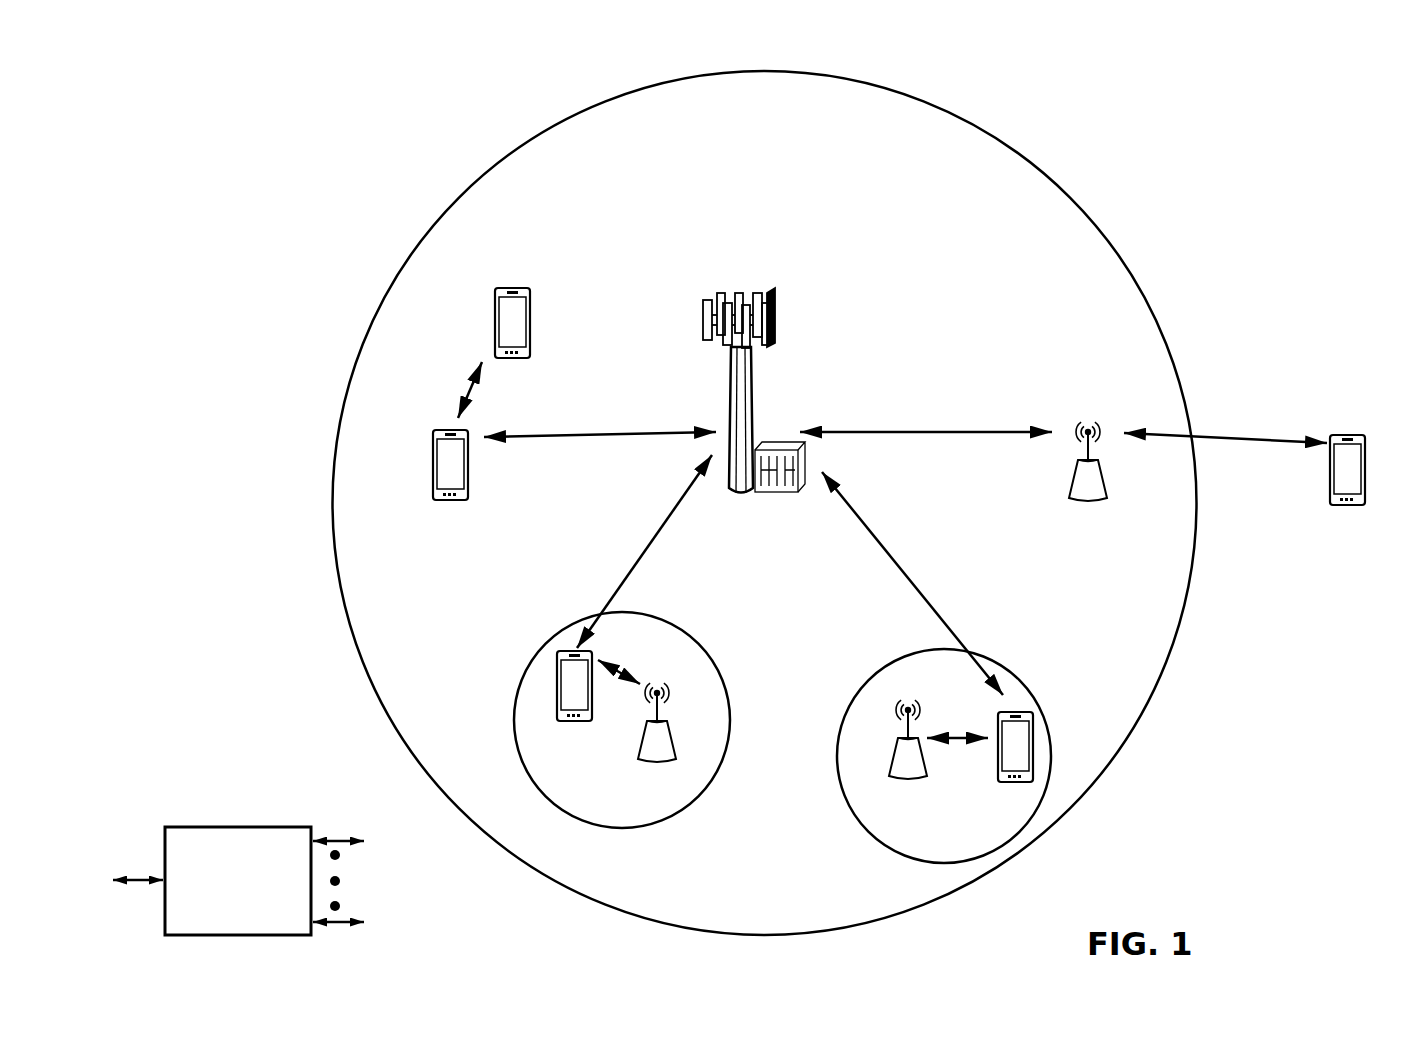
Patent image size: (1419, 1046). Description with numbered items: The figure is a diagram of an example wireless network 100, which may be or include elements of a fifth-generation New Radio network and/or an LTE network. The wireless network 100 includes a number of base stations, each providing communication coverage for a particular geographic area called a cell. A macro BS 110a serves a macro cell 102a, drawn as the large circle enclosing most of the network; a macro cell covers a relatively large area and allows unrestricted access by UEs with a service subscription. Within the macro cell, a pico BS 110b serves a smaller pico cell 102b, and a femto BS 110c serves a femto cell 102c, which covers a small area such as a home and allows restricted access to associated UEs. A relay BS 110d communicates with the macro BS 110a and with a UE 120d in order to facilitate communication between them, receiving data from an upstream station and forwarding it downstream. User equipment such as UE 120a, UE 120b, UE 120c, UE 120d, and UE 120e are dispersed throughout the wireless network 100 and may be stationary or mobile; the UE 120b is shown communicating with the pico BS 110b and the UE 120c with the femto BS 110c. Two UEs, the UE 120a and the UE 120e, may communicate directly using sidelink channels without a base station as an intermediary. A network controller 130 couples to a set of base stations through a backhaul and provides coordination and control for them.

The wireless network 100 is at (225, 68).
The macro cell 102a is at (1052, 181).
The pico cell 102b is at (713, 657).
The femto cell 102c is at (880, 665).
The macro BS 110a is at (765, 284).
The pico BS 110b is at (673, 757).
The femto BS 110c is at (892, 772).
The relay BS 110d is at (1088, 426).
The UE 120a is at (433, 464).
The UE 120b is at (560, 722).
The UE 120c is at (999, 783).
The UE 120d is at (1363, 435).
The UE 120e is at (490, 312).
The network controller 130 is at (237, 827).